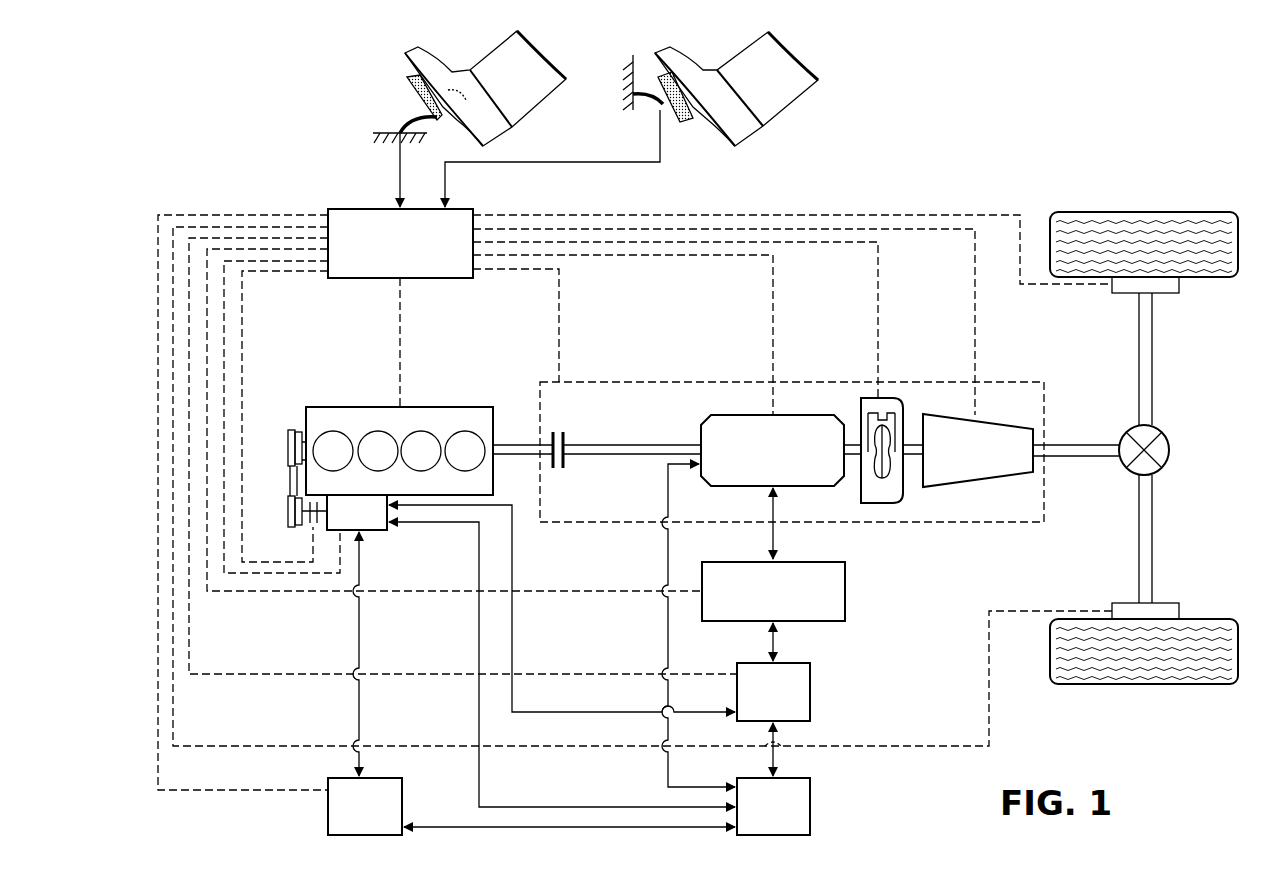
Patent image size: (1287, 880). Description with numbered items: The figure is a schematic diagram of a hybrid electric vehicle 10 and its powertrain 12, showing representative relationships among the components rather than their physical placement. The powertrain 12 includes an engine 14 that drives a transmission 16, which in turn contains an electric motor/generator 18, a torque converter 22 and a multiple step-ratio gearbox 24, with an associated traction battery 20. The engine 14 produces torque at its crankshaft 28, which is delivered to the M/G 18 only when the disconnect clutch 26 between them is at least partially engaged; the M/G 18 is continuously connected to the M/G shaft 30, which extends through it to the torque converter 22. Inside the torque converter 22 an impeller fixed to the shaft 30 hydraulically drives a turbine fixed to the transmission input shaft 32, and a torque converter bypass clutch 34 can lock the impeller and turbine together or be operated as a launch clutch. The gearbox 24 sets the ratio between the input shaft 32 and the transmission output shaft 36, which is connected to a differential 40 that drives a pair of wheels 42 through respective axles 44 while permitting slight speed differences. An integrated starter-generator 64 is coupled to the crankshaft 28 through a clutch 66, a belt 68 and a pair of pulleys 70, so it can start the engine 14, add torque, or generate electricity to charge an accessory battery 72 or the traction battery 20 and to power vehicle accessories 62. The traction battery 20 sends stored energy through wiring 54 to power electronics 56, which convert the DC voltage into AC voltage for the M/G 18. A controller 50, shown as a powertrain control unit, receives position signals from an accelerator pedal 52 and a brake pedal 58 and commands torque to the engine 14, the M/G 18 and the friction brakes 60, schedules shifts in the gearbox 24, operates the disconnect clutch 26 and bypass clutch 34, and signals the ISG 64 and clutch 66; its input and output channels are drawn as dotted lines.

The hybrid electric vehicle 10 is at (882, 128).
The powertrain 12 is at (453, 628).
The engine 14 is at (353, 407).
The transmission 16 is at (826, 382).
The electric motor/generator 18 is at (745, 414).
The traction battery 20 is at (811, 690).
The torque converter 22 is at (880, 504).
The gearbox 24 is at (975, 485).
The disconnect clutch 26 is at (567, 437).
The crankshaft 28 is at (300, 430).
The M/G shaft 30 is at (655, 444).
The transmission input shaft 32 is at (913, 444).
The torque converter bypass clutch 34 is at (882, 399).
The transmission output shaft 36 is at (1065, 444).
The differential 40 is at (1170, 452).
The wheels 42 is at (1145, 212).
The axles 44 is at (1153, 353).
The controller 50 is at (360, 208).
The accelerator pedal 52 is at (410, 90).
The wiring 54 is at (765, 645).
The power electronics 56 is at (847, 592).
The brake pedal 58 is at (748, 146).
The friction brakes 60 is at (1181, 285).
The vehicle accessories 62 is at (811, 805).
The integrated starter-generator 64 is at (378, 531).
The clutch 66 is at (311, 524).
The belt 68 is at (289, 487).
The pulleys 70 is at (287, 450).
The accessory battery 72 is at (403, 804).